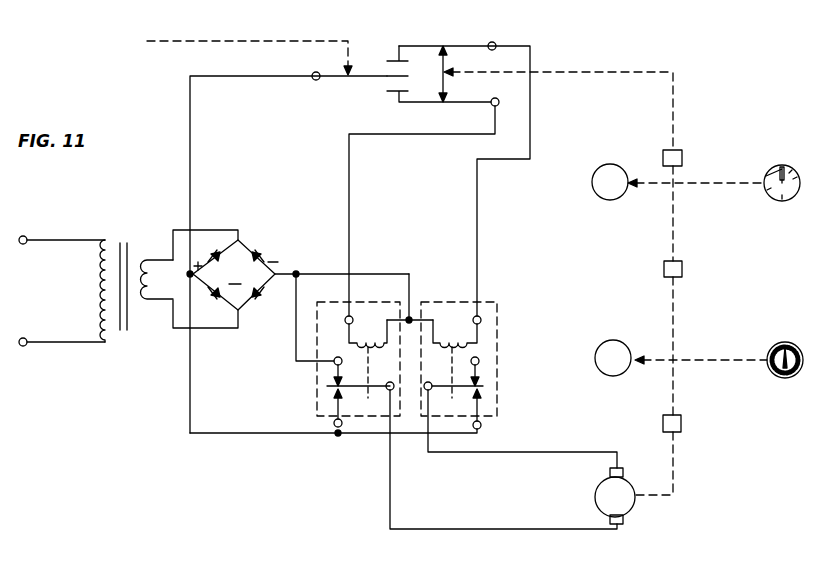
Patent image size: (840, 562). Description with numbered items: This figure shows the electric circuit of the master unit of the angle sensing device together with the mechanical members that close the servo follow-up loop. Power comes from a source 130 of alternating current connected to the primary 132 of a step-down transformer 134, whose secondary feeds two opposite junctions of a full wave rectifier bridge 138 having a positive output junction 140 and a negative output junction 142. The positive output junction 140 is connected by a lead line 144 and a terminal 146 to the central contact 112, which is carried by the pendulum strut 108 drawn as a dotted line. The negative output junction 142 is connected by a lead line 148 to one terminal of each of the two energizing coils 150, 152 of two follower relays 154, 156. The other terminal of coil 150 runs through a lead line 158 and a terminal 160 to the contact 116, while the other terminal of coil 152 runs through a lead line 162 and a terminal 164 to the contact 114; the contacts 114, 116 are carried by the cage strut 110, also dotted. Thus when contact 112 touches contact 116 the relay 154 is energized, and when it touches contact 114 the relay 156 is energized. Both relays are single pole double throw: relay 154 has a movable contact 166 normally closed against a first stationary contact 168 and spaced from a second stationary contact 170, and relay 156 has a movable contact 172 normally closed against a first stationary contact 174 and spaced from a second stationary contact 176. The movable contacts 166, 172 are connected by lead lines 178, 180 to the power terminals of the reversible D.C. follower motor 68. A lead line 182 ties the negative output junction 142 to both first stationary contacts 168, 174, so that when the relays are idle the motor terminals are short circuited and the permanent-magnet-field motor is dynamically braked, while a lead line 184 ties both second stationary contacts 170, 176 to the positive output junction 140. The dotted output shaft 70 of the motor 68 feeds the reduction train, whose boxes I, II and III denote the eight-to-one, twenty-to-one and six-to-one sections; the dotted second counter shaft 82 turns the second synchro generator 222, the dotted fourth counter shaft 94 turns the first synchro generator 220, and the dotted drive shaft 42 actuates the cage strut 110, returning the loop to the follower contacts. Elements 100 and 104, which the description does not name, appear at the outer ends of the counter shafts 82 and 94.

The pendulum strut 108 is at (270, 41).
The cage strut 110 is at (612, 73).
The central contact 112 is at (386, 78).
The contact 114 is at (390, 60).
The contact 116 is at (398, 93).
The source of alternating current 130 is at (50, 276).
The primary 132 is at (84, 240).
The step-down transformer 134 is at (150, 228).
The full wave rectifier bridge 138 is at (225, 279).
The positive output junction 140 is at (220, 280).
The negative output junction 142 is at (277, 260).
The lead line 144 is at (192, 176).
The terminal 146 is at (314, 81).
The lead line 148 is at (390, 276).
The energizing coil 150 is at (370, 336).
The energizing coil 152 is at (449, 339).
The follower relay 154 is at (308, 395).
The follower relay 156 is at (524, 400).
The lead line 158 is at (348, 243).
The terminal 160 is at (508, 96).
The lead line 162 is at (478, 227).
The terminal 164 is at (497, 45).
The movable contact 166 is at (352, 388).
The first stationary contact 168 is at (330, 370).
The second stationary contact 170 is at (328, 414).
The movable contact 172 is at (441, 383).
The first stationary contact 174 is at (480, 376).
The second stationary contact 176 is at (482, 426).
The lead line 178 is at (390, 504).
The lead line 180 is at (534, 457).
The lead line 182 is at (294, 339).
The lead line 184 is at (213, 434).
The drive shaft 42 is at (675, 99).
The reversible D.C. follower motor 68 is at (595, 500).
The output shaft 70 is at (664, 497).
The second counter shaft 82 is at (660, 356).
The fourth counter shaft 94 is at (648, 185).
The dial 100 is at (781, 342).
The dial 104 is at (772, 173).
The first synchro generator 220 is at (602, 196).
The second synchro generator 222 is at (610, 344).
The first 8:1 section of the reduction train I is at (682, 423).
The second 20:1 section of the reduction train II is at (683, 266).
The third 6:1 section of the reduction train III is at (683, 157).